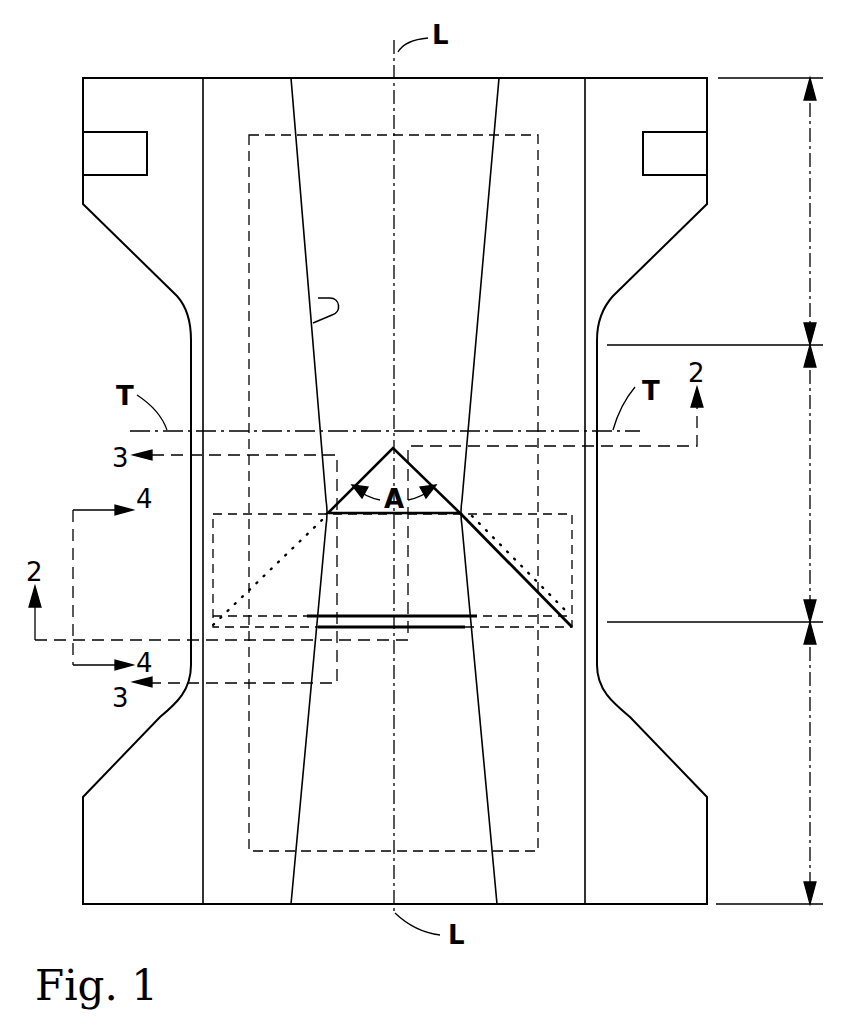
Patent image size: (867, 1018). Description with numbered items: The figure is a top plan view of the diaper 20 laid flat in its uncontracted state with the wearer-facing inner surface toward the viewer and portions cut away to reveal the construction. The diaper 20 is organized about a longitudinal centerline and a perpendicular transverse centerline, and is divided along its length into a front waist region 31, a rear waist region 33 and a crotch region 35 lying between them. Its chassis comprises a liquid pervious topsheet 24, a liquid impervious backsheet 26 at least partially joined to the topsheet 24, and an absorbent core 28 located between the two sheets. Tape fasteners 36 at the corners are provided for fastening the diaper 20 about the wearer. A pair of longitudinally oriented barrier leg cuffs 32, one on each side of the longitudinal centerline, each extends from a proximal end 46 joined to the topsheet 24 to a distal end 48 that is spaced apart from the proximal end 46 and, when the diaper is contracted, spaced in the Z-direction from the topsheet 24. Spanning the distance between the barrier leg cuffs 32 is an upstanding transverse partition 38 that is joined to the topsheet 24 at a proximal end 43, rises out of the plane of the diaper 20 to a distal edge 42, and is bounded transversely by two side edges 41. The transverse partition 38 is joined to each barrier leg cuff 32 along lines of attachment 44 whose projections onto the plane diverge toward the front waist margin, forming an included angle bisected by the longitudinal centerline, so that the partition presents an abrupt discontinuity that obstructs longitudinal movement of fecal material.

The diaper 20 is at (665, 477).
The topsheet 24 is at (450, 163).
The backsheet 26 is at (130, 227).
The absorbent core 28 is at (330, 163).
The front waist region 31 is at (772, 763).
The barrier leg cuffs 32 is at (265, 792).
The rear waist region 33 is at (718, 211).
The crotch region 35 is at (718, 483).
The tape fasteners 36 is at (112, 143).
The transverse partition 38 is at (435, 567).
The side edges 41 is at (213, 513).
The distal edge 42 is at (252, 512).
The proximal end 43 is at (292, 620).
The lines of attachment 44 is at (270, 570).
The proximal end 46 is at (202, 758).
The distal end 48 is at (320, 298).